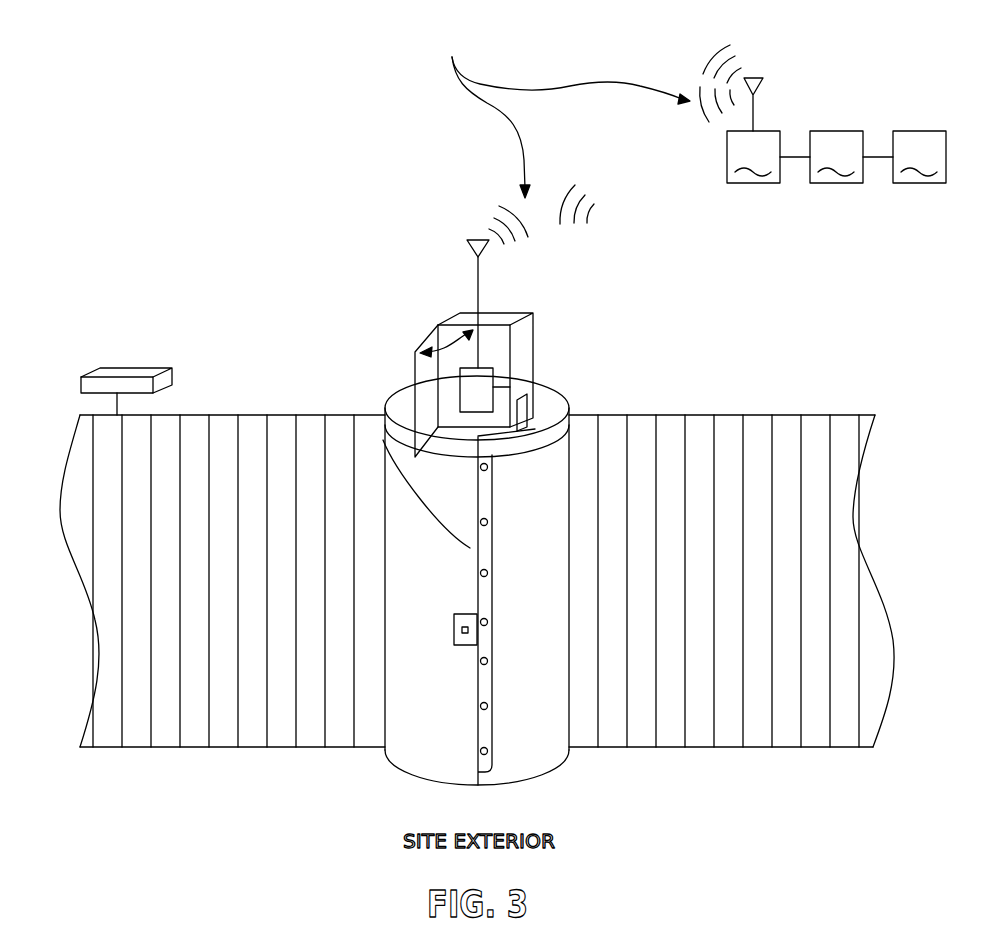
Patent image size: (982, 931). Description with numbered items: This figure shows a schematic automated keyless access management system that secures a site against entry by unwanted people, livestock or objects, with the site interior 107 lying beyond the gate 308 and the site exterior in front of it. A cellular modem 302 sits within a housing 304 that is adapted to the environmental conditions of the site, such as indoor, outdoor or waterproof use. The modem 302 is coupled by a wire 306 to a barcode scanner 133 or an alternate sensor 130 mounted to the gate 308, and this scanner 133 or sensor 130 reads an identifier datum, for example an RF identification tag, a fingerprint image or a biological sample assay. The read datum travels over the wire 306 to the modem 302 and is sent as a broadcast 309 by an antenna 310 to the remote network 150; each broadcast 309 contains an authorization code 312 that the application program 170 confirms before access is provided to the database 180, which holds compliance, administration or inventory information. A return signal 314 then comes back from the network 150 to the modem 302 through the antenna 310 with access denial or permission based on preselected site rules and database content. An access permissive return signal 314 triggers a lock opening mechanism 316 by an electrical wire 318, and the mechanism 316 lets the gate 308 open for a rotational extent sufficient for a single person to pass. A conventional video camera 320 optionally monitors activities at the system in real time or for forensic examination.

The site interior 107 is at (680, 352).
The sensor 130 is at (462, 638).
The barcode scanner 133 is at (362, 616).
The network 150 is at (753, 130).
The application program 170 is at (821, 157).
The database 180 is at (904, 157).
The cellular modem 302 is at (470, 388).
The housing 304 is at (520, 340).
The wire 306 is at (383, 440).
The gate 308 is at (570, 728).
The broadcast 309 is at (483, 112).
The antenna 310 is at (477, 282).
The authorization code 312 is at (571, 80).
The return signal 314 is at (707, 50).
The lock opening mechanism 316 is at (570, 413).
The electrical wire 318 is at (530, 425).
The video camera 320 is at (123, 376).